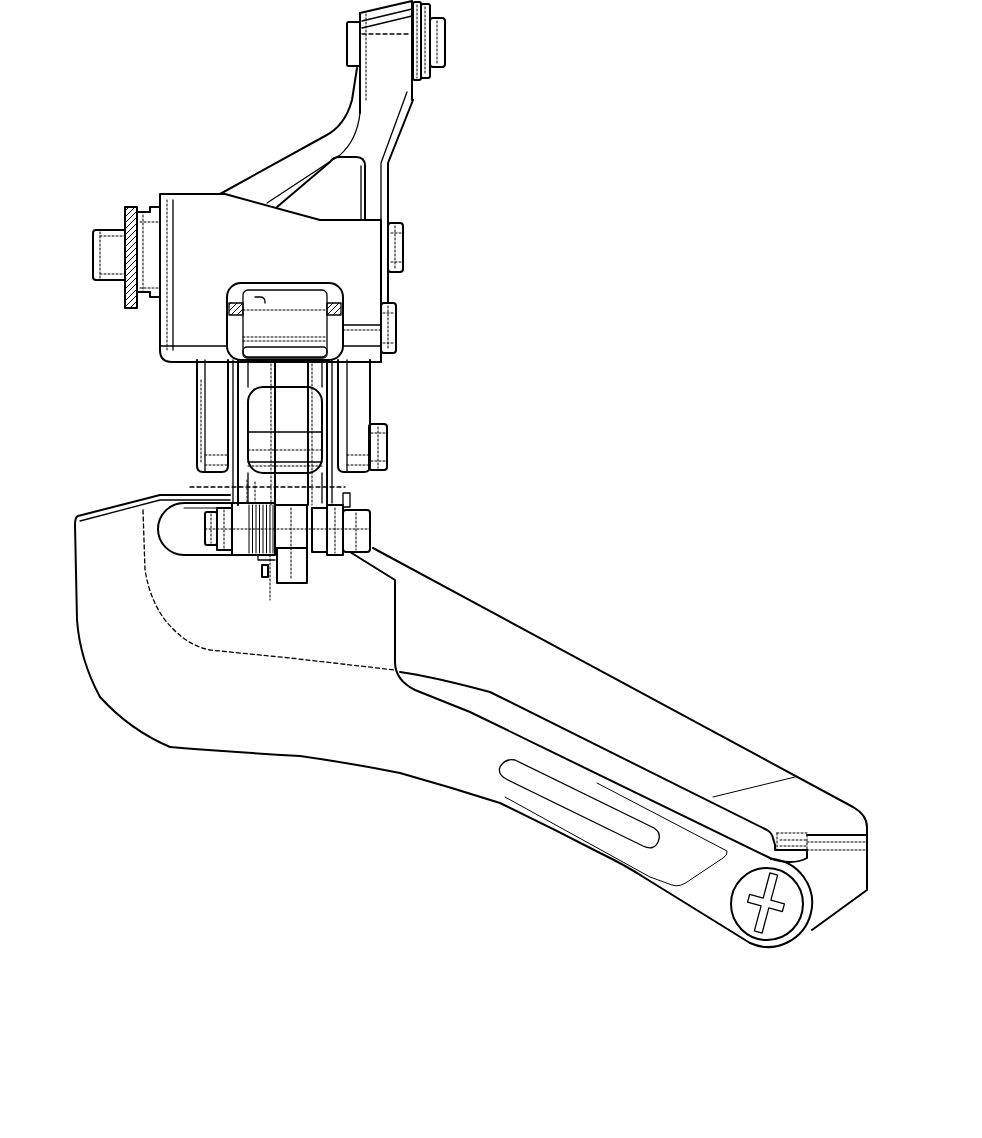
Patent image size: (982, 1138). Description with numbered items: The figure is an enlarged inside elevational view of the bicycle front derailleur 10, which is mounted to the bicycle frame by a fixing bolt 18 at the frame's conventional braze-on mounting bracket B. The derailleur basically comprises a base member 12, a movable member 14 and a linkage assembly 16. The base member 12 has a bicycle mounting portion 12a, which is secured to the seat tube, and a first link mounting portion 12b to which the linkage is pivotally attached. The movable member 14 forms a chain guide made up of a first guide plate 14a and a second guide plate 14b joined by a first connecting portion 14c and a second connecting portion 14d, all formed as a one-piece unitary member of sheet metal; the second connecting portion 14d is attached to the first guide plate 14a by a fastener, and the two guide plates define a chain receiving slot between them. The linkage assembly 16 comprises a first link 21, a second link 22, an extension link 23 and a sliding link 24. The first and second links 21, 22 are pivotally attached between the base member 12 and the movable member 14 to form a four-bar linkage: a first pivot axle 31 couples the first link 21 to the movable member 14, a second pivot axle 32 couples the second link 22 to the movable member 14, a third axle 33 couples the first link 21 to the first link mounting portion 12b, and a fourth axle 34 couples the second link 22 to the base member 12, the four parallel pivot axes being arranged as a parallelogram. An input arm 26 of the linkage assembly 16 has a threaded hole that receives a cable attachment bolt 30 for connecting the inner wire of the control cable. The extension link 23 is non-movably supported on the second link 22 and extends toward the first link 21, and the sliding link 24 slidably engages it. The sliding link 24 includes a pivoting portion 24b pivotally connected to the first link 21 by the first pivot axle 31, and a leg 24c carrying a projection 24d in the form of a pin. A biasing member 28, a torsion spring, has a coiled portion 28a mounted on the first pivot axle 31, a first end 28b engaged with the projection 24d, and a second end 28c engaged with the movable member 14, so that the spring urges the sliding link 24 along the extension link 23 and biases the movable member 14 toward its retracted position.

The bicycle front derailleur 10 is at (507, 157).
The base member 12 is at (202, 187).
The bicycle mounting portion 12a is at (160, 206).
The first link mounting portion 12b is at (358, 320).
The movable member 14 is at (547, 623).
The first guide plate 14a is at (331, 725).
The second guide plate 14b is at (656, 744).
The first connecting portion 14c is at (120, 488).
The second connecting portion 14d is at (816, 836).
The linkage assembly 16 is at (350, 405).
The fixing bolt 18 is at (106, 234).
The first link 21 is at (228, 420).
The second link 22 is at (292, 143).
The extension link 23 is at (240, 357).
The sliding link 24 is at (272, 410).
The pivoting portion 24b is at (290, 549).
The leg 24c is at (310, 570).
The projection 24d is at (262, 572).
The input arm 26 is at (372, 55).
The biasing member 28 is at (255, 565).
The coiled portion 28a is at (260, 555).
The first end 28b is at (269, 581).
The second end 28c is at (248, 478).
The cable attachment bolt 30 is at (446, 40).
The first pivot axle 31 is at (370, 521).
The second pivot axle 32 is at (387, 446).
The third axle 33 is at (398, 316).
The fourth axle 34 is at (403, 243).
The braze-on mounting bracket B is at (125, 230).